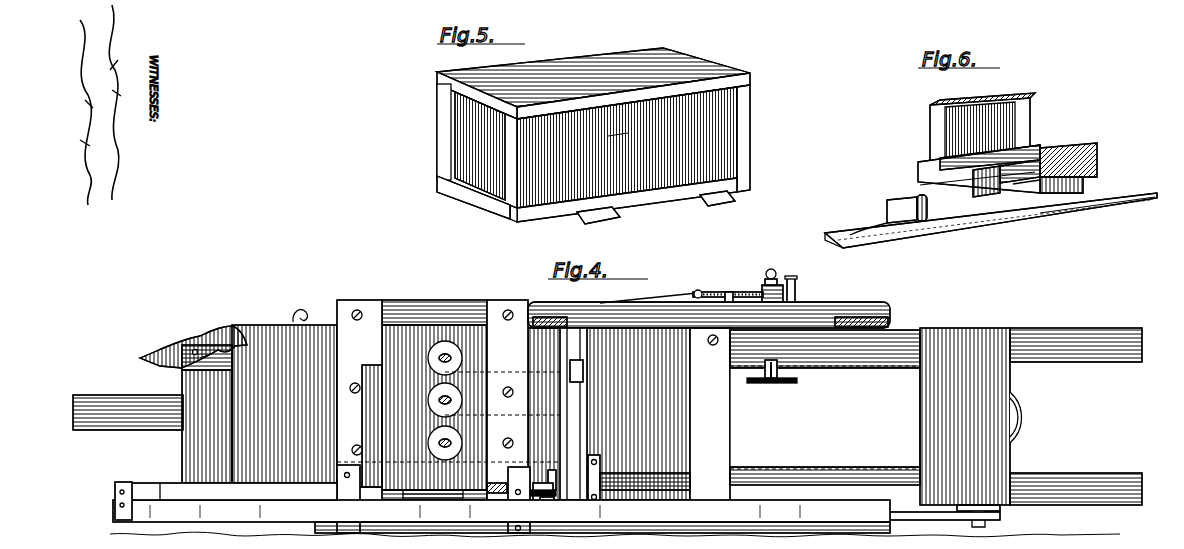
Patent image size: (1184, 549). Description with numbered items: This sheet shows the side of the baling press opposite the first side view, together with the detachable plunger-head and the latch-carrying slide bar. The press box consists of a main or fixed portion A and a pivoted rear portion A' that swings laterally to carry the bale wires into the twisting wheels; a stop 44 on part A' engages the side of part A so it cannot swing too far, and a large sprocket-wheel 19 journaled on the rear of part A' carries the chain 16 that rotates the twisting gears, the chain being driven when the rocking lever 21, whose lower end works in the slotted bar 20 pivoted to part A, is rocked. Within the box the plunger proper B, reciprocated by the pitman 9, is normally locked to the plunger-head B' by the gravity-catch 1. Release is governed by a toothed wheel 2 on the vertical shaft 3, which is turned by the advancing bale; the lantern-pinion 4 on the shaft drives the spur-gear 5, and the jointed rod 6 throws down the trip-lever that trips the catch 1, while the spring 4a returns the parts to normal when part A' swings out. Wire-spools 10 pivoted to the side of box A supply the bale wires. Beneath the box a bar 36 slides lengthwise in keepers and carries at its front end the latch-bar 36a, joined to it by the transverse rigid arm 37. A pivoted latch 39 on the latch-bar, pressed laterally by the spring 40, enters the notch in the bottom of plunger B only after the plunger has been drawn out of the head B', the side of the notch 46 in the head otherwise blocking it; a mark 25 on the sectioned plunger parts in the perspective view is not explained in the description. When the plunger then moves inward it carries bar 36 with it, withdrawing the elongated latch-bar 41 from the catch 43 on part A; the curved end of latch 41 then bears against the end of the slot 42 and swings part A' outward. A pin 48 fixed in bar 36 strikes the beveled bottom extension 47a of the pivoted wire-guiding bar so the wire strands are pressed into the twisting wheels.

In FIG. 4, the gravity-catch 1 is at (197, 324).
In FIG. 4, the toothed wheel 2 is at (765, 380).
In FIG. 4, the vertical shaft 3 is at (778, 380).
In FIG. 4, the lantern-pinion 4 is at (762, 290).
In FIG. 4, the spring 4a is at (778, 281).
In FIG. 4, the spur-gear 5 is at (706, 292).
In FIG. 4, the jointed rod 6 is at (670, 302).
In FIG. 4, the pitman 9 is at (124, 405).
In FIG. 4, the wire-spools 10 is at (433, 442).
In FIG. 4, the chain 16 is at (853, 368).
In FIG. 4, the sprocket-wheel 19 is at (1022, 412).
In FIG. 4, the bar 20 is at (935, 522).
In FIG. 4, the rocking lever 21 is at (997, 523).
In FIG. 6, the slot 25 is at (1008, 165).
In FIG. 4, the sliding bar 36 is at (183, 515).
In FIG. 6, the latch-bar 36a is at (991, 220).
In FIG. 4, the latch-bar 36a is at (137, 483).
In FIG. 4, the transverse rigid arm 37 is at (115, 494).
In FIG. 6, the pivoted latch 39 is at (893, 203).
In FIG. 4, the spring 40 is at (547, 503).
In FIG. 4, the elongated latch-bar 41 is at (612, 480).
In FIG. 4, the slot 42 is at (650, 480).
In FIG. 4, the catch 43 is at (563, 497).
In FIG. 4, the stop 44 is at (585, 368).
In FIG. 6, the notch 46 is at (1013, 187).
In FIG. 4, the bottom extension 47a is at (549, 457).
In FIG. 4, the pin 48 is at (442, 500).
In FIG. 4, the fixed portion of the press box A is at (687, 393).
In FIG. 4, the swinging portion of the press box A' is at (885, 407).
In FIG. 5, the plunger proper B is at (593, 136).
In FIG. 6, the plunger proper B is at (1013, 143).
In FIG. 6, the plunger-head B' is at (1005, 169).
In FIG. 4, the plunger-head B' is at (207, 426).